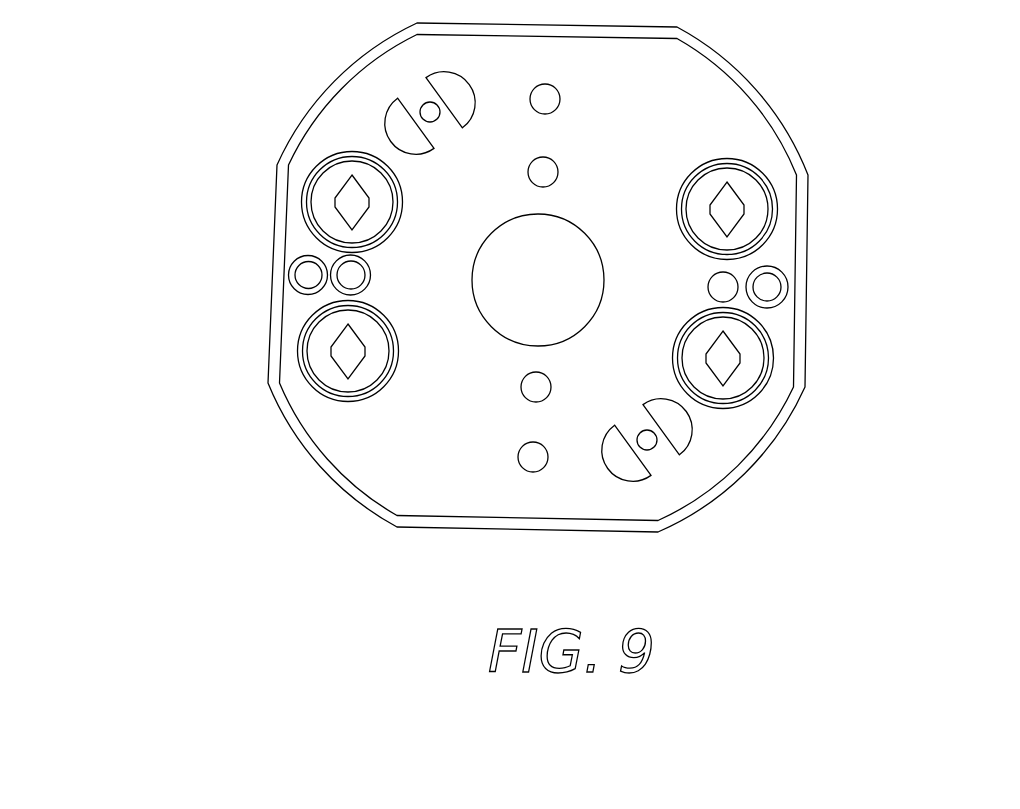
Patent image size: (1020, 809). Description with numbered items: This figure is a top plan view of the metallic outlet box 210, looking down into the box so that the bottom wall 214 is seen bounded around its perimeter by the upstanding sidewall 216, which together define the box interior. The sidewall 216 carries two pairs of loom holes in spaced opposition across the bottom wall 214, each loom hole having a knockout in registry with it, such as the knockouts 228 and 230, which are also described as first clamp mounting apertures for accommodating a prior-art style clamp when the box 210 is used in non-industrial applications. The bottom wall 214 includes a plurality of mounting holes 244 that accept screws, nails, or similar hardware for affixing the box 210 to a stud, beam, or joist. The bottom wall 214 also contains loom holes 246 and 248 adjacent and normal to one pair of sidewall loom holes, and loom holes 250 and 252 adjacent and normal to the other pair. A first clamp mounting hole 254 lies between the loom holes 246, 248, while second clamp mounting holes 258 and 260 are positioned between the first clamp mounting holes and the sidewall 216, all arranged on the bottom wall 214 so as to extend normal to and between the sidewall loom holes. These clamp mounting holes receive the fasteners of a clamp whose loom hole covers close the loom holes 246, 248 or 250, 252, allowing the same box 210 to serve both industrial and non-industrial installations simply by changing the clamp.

The metallic outlet box 210 is at (120, 183).
The bottom wall 214 is at (370, 103).
The sidewall 216 is at (300, 121).
The knockout 228 is at (788, 289).
The knockout 230 is at (337, 288).
The mounting holes 244 is at (517, 401).
The loom hole 246 is at (313, 393).
The loom hole 248 is at (327, 192).
The loom hole 250 is at (757, 401).
The loom hole 252 is at (755, 163).
The first clamp mounting hole 254 is at (297, 282).
The second clamp mounting hole 258 is at (290, 266).
The second clamp mounting hole 260 is at (768, 283).